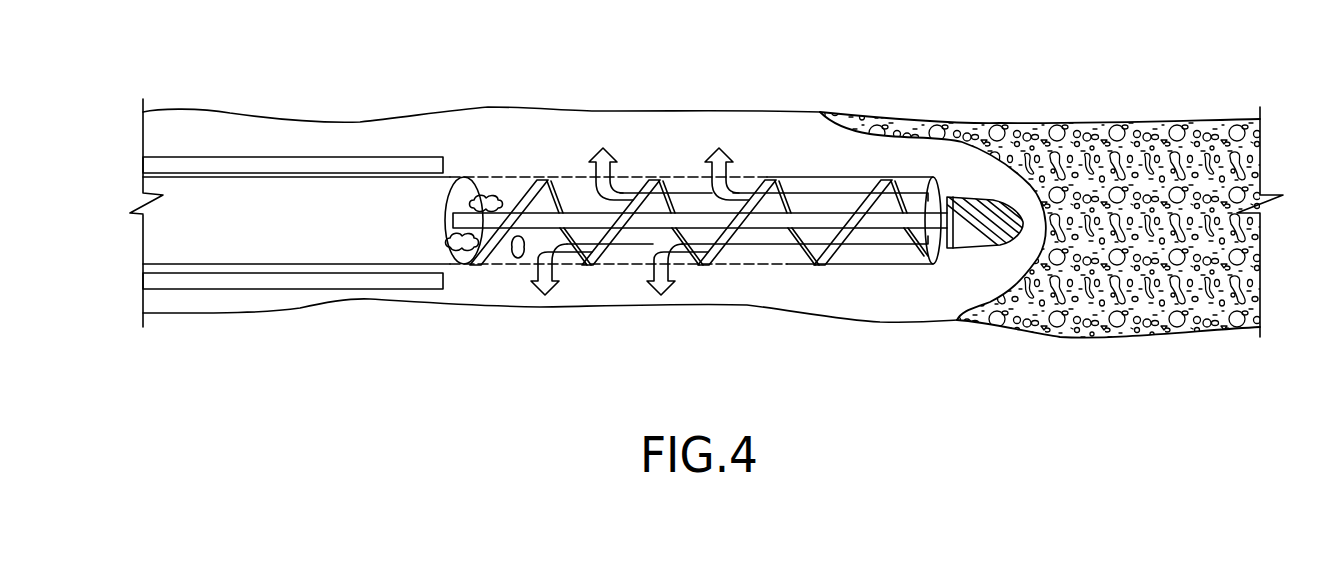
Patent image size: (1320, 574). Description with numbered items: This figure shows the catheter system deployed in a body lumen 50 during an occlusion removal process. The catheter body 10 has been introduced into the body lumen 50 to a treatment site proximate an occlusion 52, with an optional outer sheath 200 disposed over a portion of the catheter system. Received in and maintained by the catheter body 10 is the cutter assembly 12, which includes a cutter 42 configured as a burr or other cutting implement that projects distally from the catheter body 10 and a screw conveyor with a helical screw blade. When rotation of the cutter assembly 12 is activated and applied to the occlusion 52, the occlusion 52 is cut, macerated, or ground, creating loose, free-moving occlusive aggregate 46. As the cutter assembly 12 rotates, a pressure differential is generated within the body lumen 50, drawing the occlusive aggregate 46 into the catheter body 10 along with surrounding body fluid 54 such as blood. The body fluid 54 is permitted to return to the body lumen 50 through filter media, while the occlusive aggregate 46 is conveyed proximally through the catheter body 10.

The catheter body 10 is at (572, 287).
The cutter assembly 12 is at (870, 222).
The cutter 42 is at (990, 247).
The occlusive aggregate 46 is at (580, 187).
The body lumen 50 is at (488, 107).
The occlusion 52 is at (1143, 135).
The body fluid 54 is at (842, 313).
The outer sheath 200 is at (244, 160).